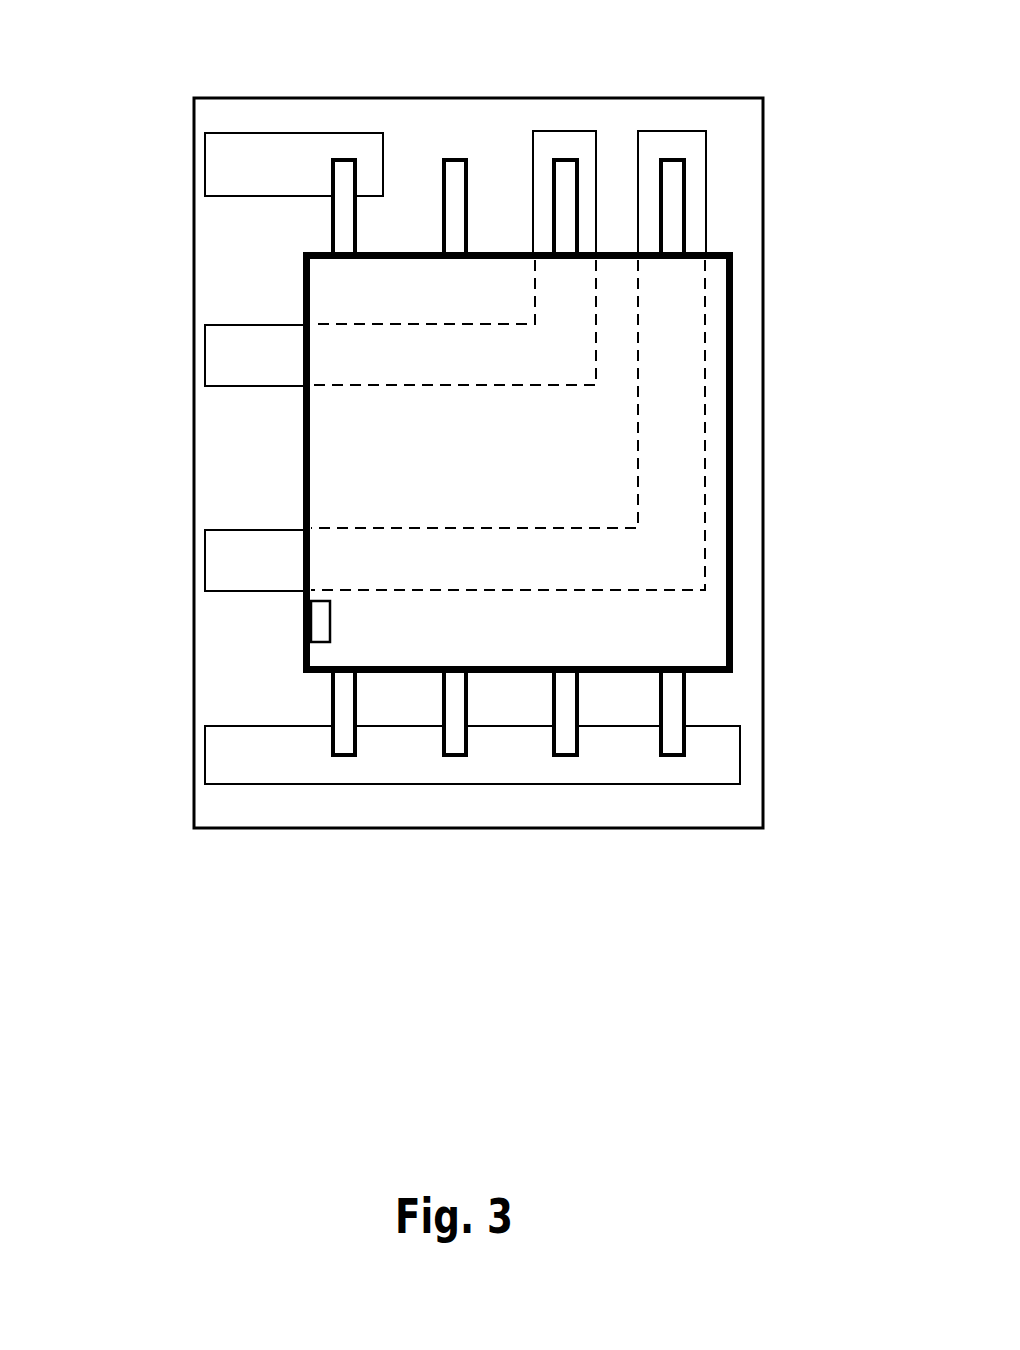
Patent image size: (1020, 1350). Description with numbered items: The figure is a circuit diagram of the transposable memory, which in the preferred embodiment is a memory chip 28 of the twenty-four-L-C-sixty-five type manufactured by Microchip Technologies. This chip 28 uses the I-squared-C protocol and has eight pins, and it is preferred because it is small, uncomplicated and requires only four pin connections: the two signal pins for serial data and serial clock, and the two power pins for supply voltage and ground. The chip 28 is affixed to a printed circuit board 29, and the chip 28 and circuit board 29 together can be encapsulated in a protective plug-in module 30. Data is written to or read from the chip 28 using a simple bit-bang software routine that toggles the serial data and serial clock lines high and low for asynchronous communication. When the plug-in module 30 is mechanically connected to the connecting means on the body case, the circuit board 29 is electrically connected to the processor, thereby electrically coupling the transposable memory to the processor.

The 24LC65 chip 28 is at (701, 625).
The printed circuit board 29 is at (472, 414).
The protective plug-in module 30 is at (472, 457).